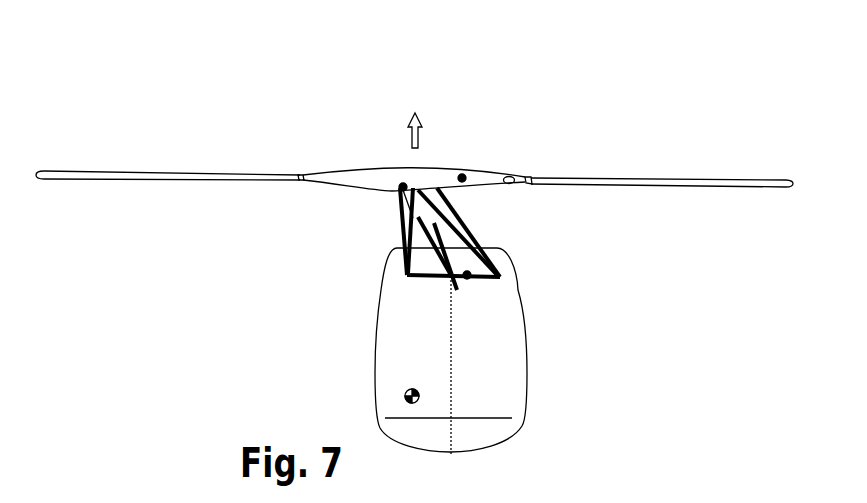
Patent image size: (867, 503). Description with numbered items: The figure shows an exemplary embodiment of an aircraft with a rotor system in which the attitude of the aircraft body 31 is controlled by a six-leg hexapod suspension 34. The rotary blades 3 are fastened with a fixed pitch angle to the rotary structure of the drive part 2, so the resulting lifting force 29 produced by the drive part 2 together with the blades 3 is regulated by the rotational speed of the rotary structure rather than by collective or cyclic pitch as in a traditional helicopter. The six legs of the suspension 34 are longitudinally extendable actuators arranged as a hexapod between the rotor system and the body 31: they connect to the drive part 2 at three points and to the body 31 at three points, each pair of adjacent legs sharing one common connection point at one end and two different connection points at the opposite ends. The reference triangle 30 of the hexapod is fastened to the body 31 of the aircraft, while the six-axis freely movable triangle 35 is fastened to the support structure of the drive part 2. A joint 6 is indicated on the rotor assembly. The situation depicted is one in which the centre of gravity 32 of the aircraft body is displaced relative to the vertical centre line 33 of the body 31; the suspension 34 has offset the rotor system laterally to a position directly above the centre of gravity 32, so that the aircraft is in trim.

The drive part 2 is at (463, 174).
The rotary blades 3 is at (673, 178).
The hinge joint 6 is at (510, 177).
The resulting lifting force 29 is at (418, 112).
The reference triangle 30 is at (470, 276).
The aircraft body 31 is at (530, 373).
The centre of gravity 32 is at (400, 395).
The vertical centre line 33 is at (448, 348).
The 6-leg suspension 34 is at (380, 227).
The 6-axis freely movable triangle 35 is at (400, 188).